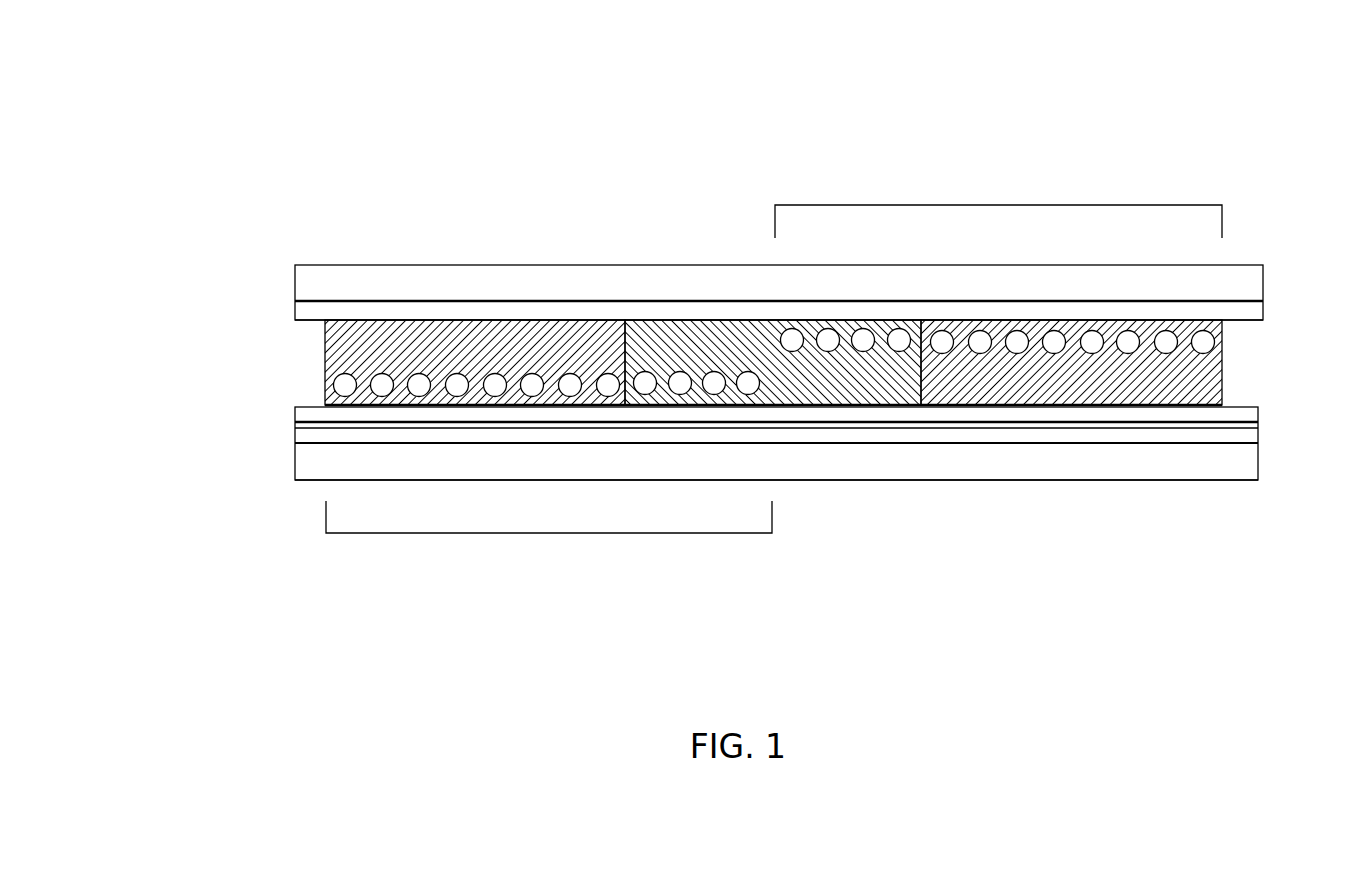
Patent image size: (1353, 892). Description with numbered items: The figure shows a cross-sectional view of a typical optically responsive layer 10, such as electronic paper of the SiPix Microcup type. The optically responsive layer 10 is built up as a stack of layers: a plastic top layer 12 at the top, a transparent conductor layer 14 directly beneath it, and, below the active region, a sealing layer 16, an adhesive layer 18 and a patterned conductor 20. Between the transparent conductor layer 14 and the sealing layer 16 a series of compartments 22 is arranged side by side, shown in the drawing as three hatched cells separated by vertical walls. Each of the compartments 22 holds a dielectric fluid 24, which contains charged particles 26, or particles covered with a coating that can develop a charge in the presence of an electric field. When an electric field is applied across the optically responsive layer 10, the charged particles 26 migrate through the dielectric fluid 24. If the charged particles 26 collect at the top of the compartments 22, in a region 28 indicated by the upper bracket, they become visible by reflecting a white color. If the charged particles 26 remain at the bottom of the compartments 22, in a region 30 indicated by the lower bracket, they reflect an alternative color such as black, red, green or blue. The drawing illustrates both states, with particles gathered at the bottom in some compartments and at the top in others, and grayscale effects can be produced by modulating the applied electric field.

The optically responsive layer 10 is at (205, 232).
The plastic top layer 12 is at (400, 263).
The transparent conductor layer 14 is at (295, 310).
The sealing layer 16 is at (293, 407).
The adhesive layer 18 is at (293, 435).
The patterned conductor 20 is at (293, 460).
The compartments 22 is at (593, 320).
The dielectric fluid 24 is at (350, 358).
The charged particles 26 is at (495, 373).
The region 28 is at (833, 205).
The region 30 is at (707, 533).